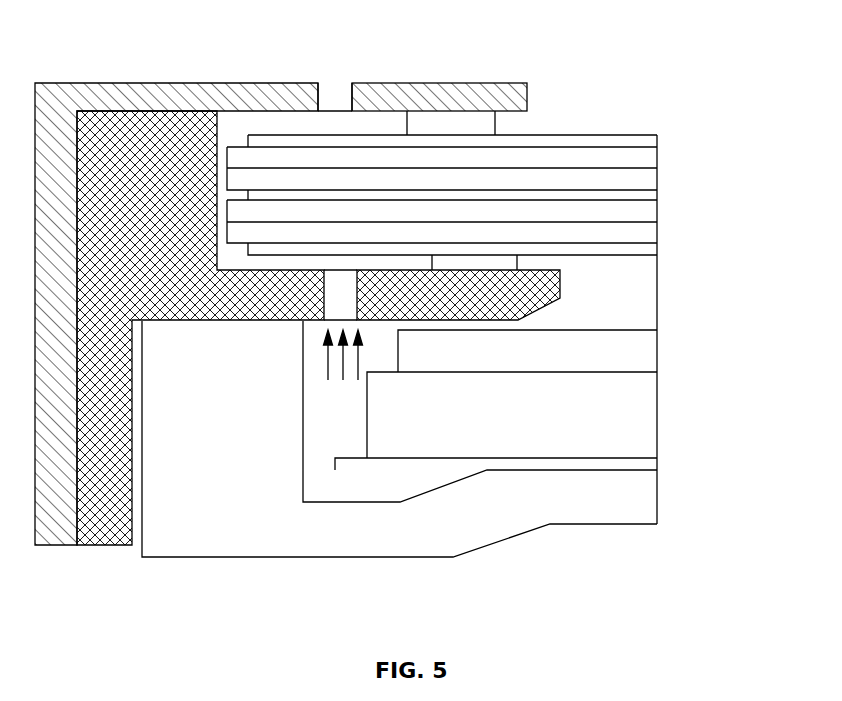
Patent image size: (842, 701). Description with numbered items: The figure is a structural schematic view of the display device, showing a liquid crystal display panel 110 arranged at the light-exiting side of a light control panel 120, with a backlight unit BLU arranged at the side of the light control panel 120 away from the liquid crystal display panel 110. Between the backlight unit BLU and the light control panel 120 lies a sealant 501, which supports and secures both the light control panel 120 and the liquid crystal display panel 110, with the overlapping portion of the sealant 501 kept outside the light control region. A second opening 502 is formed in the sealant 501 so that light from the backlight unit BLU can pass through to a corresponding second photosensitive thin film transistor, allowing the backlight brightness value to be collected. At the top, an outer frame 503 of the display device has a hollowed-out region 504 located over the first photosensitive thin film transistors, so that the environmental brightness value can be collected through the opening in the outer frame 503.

The liquid crystal display panel 110 is at (665, 163).
The light control panel 120 is at (665, 216).
The sealant 501 is at (132, 472).
The second opening 502 is at (325, 304).
The outer frame 503 is at (472, 95).
The hollowed-out region 504 is at (337, 85).
The backlight unit BLU is at (308, 557).